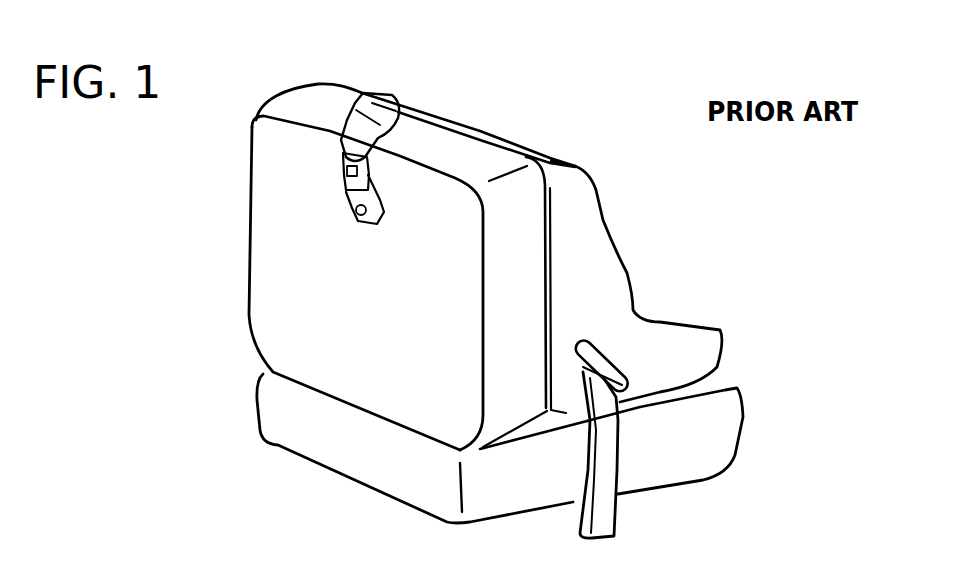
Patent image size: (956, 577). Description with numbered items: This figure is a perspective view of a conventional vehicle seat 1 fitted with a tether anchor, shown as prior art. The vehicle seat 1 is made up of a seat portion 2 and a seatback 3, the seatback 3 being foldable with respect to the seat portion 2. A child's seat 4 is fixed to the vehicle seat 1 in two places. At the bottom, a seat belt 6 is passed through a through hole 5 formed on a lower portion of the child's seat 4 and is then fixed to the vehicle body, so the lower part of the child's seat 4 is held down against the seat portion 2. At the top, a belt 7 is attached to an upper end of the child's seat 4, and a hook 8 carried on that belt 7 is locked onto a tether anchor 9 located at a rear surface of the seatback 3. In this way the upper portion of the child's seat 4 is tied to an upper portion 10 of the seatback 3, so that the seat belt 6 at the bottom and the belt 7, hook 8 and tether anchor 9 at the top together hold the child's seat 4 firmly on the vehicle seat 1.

The vehicle seat 1 is at (477, 309).
The seat portion 2 is at (722, 410).
The seatback 3 is at (282, 347).
The child's seat 4 is at (623, 313).
The through hole 5 is at (622, 382).
The seat belt 6 is at (607, 460).
The belt 7 is at (395, 104).
The hook 8 is at (336, 125).
The tether anchor 9 is at (348, 193).
The upper portion of the seatback 10 is at (484, 145).